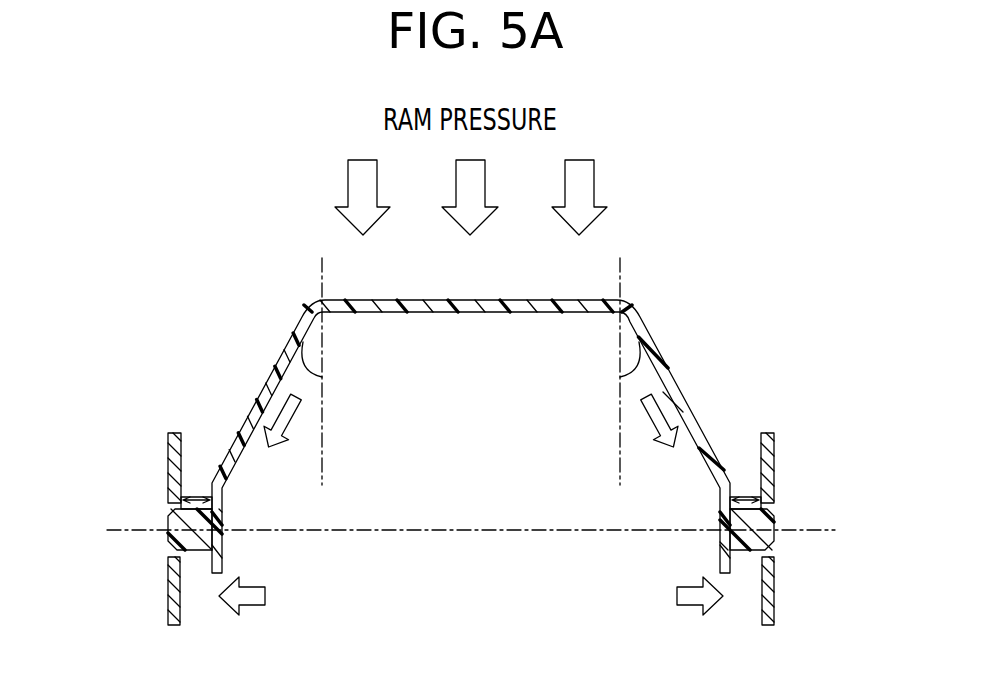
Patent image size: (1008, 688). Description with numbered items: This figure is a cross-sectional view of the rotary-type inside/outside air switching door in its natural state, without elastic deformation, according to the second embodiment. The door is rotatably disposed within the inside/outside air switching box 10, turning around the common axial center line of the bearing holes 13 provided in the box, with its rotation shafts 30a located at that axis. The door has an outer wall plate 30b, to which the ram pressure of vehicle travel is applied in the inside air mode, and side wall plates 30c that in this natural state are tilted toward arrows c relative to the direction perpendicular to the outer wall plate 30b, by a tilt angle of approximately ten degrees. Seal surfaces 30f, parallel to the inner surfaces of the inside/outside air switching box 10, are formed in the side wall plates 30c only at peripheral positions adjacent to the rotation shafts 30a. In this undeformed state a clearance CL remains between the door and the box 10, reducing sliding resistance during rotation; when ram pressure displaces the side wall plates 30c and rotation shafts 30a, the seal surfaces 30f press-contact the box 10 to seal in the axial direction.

The inside/outside air switching box 10 is at (157, 455).
The bearing hole 13 is at (170, 555).
The rotation shaft 30a is at (172, 545).
The outer wall plate 30b is at (510, 301).
The side wall plate 30c is at (283, 358).
The seal surface 30f is at (210, 496).
The clearance CL is at (197, 498).
The arrow c is at (254, 607).